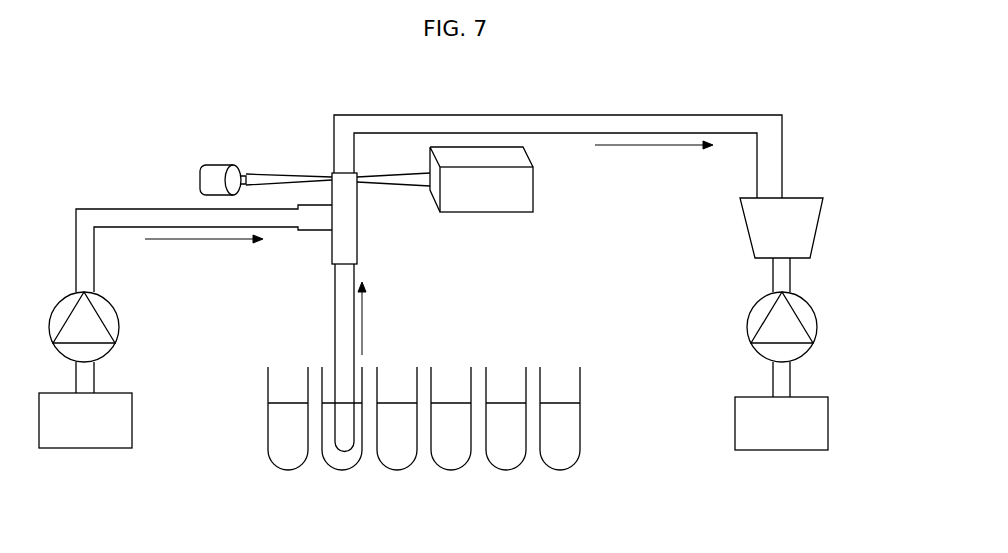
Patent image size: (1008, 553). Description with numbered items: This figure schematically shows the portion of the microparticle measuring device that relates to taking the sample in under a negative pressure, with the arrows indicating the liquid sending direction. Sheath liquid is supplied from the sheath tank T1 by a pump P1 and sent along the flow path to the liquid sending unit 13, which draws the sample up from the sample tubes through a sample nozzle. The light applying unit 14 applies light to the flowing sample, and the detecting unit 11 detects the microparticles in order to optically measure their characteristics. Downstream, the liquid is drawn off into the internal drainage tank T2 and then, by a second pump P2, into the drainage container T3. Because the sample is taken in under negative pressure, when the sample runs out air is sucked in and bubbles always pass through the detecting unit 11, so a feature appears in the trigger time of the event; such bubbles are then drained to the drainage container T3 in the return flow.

The detecting unit 11 is at (528, 187).
The liquid sending unit 13 is at (340, 308).
The light applying unit 14 is at (200, 177).
The pump P1 is at (118, 333).
The pump P2 is at (816, 333).
The sheath tank T1 is at (130, 418).
The internal drainage tank T2 is at (817, 222).
The drainage container T3 is at (828, 425).